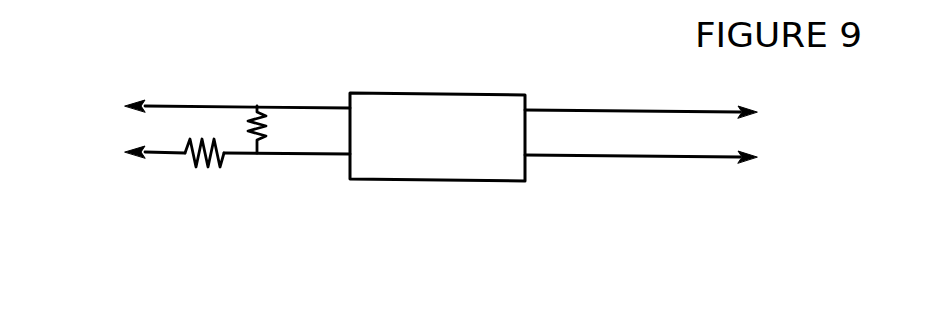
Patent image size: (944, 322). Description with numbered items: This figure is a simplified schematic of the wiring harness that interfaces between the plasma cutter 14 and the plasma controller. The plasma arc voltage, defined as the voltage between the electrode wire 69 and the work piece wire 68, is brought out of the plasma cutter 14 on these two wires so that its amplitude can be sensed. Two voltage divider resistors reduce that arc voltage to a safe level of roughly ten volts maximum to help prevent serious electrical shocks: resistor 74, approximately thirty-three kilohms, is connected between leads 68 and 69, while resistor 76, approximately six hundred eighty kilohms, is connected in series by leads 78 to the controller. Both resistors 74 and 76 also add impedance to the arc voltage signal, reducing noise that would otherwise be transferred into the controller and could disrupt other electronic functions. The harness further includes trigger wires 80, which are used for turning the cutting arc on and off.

The plasma cutter 14 is at (398, 93).
The work piece wire 68 is at (270, 106).
The electrode wire 69 is at (293, 157).
The voltage divider resistor 74 is at (250, 122).
The voltage divider resistor 76 is at (181, 157).
The leads 78 is at (152, 156).
The trigger wires 80 is at (715, 114).